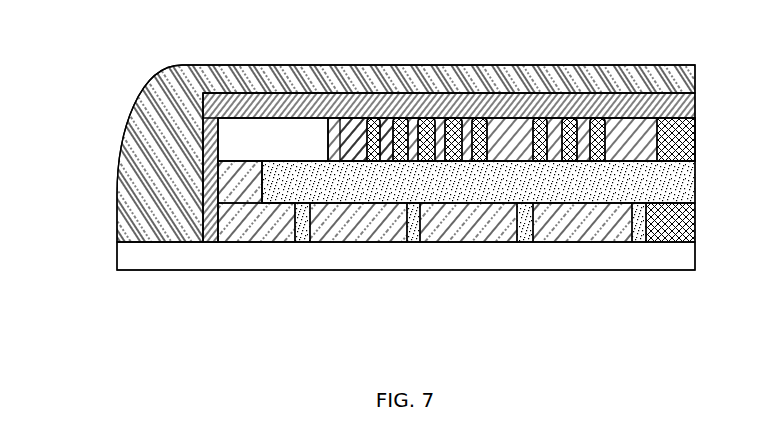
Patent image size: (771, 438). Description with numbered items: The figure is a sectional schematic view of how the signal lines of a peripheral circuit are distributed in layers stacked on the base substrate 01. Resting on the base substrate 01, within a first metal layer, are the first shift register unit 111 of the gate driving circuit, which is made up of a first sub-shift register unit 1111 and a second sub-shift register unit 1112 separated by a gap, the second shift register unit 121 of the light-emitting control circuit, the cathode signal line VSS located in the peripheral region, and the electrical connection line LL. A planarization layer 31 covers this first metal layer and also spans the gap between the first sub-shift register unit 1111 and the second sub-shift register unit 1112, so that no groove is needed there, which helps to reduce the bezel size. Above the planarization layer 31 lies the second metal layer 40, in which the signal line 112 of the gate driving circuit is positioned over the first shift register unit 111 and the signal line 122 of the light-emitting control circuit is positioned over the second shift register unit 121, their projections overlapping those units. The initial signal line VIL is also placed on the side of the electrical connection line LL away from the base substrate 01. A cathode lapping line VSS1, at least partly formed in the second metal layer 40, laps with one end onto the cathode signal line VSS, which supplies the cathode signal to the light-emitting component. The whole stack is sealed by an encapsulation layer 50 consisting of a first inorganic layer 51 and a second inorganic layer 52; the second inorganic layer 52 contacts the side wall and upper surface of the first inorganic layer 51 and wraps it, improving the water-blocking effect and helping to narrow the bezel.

The base substrate 01 is at (660, 258).
The first shift register unit 111 is at (526, 281).
The first sub-shift register unit 1111 is at (468, 223).
The second sub-shift register unit 1112 is at (582, 262).
The signal line 112 is at (430, 92).
The second shift register unit 121 is at (358, 220).
The signal line 122 is at (372, 92).
The planarization layer 31 is at (673, 183).
The second metal layer 40 is at (700, 125).
The encapsulation layer 50 is at (443, 152).
The first inorganic layer 51 is at (675, 100).
The second inorganic layer 52 is at (673, 78).
The initial signal line VIL is at (683, 142).
The electrical connection line LL is at (673, 228).
The cathode signal line VSS is at (243, 225).
The cathode lapping line VSS1 is at (243, 148).